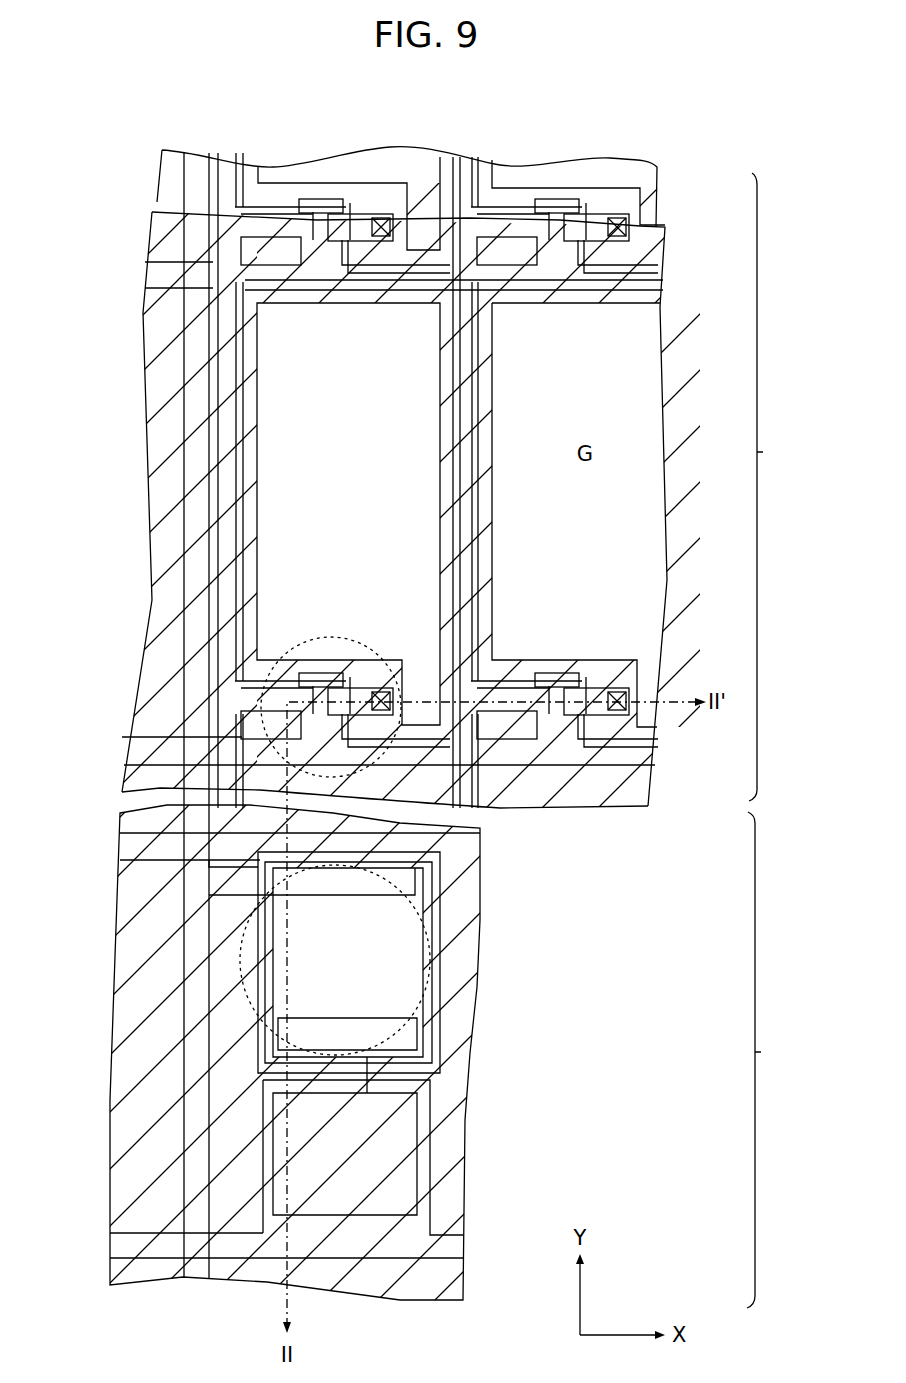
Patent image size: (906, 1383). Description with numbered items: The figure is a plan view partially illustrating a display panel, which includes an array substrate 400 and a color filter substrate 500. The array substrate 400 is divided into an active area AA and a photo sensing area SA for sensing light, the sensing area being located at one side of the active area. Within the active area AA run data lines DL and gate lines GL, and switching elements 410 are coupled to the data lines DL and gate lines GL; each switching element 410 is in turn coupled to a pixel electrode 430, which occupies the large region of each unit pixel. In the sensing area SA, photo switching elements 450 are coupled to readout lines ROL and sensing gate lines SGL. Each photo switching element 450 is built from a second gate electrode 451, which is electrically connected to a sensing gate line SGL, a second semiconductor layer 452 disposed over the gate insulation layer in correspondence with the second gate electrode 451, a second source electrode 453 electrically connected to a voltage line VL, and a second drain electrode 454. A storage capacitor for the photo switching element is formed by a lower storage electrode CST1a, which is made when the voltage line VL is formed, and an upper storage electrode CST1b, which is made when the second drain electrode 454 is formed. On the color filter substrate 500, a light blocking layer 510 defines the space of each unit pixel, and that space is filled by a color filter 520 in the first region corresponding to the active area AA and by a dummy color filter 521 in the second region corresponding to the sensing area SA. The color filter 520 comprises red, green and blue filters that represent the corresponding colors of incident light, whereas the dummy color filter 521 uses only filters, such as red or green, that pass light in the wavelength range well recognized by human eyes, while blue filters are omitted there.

The array substrate 400 is at (657, 178).
The color filter substrate 500 is at (665, 243).
The light blocking layer 510 is at (645, 787).
The color filter 520 is at (288, 393).
The pixel electrode 430 is at (288, 492).
The switching element 410 is at (290, 605).
The photo switching element 450 is at (233, 940).
The second gate electrode 451 is at (423, 930).
The second semiconductor layer 452 is at (423, 973).
The second source electrode 453 is at (417, 1033).
The second drain electrode 454 is at (420, 882).
The dummy color filter 521 is at (438, 1072).
The data line DL is at (220, 657).
The gate line GL is at (135, 752).
The sensing gate line SGL is at (130, 843).
The readout line ROL is at (190, 1023).
The voltage line VL is at (133, 1246).
The lower storage electrode CST1a is at (430, 1185).
The upper storage electrode CST1b is at (430, 1137).
The active area AA is at (773, 487).
The photo sensing area SA is at (770, 1060).